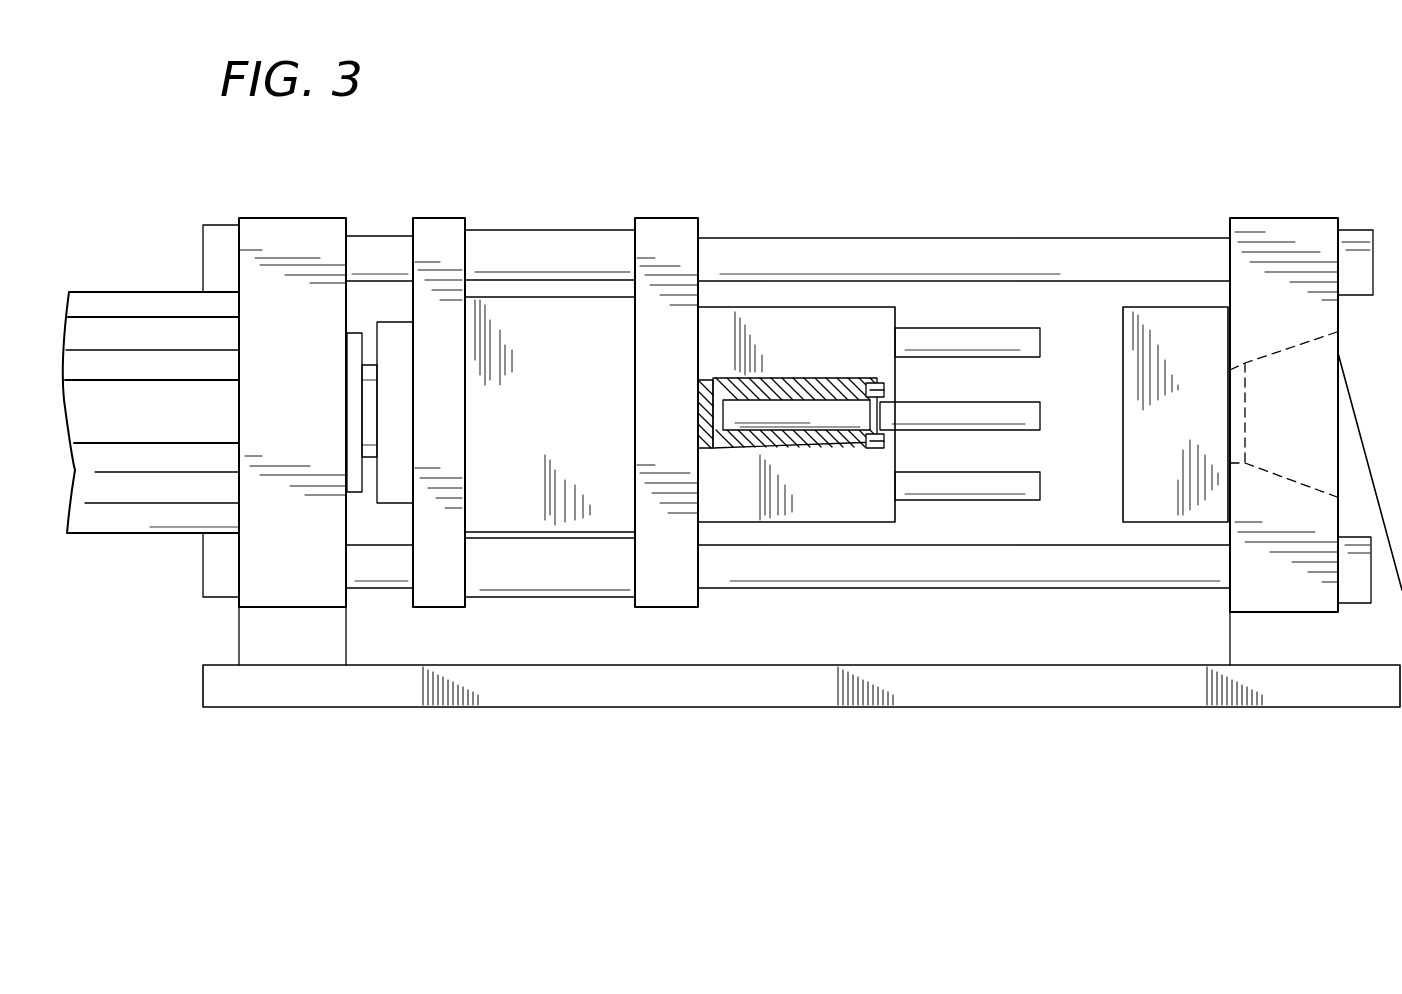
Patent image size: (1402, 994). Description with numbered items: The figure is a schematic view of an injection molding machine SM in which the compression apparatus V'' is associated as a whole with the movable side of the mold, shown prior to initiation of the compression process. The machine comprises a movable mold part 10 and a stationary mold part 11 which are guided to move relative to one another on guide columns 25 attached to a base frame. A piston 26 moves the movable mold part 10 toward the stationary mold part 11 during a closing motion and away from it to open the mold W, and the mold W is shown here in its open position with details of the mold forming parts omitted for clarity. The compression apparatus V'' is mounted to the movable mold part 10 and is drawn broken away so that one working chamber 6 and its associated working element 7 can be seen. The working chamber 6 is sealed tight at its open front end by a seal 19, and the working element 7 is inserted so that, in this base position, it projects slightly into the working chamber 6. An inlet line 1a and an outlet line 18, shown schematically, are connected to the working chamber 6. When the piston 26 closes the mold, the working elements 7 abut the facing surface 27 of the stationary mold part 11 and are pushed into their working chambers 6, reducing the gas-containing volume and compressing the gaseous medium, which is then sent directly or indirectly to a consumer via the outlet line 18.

The inlet line 1a is at (799, 394).
The working chamber 6 is at (770, 415).
The working element 7 is at (1018, 412).
The movable mold part 10 is at (550, 517).
The stationary mold part 11 is at (1208, 497).
The outlet line 18 is at (715, 448).
The seal 19 is at (875, 383).
The guide columns 25 is at (955, 260).
The piston 26 is at (393, 492).
The facing surface 27 is at (1125, 485).
The injection molding machine SM is at (662, 722).
The mold W is at (1173, 772).
The compression apparatus V'' is at (1003, 232).